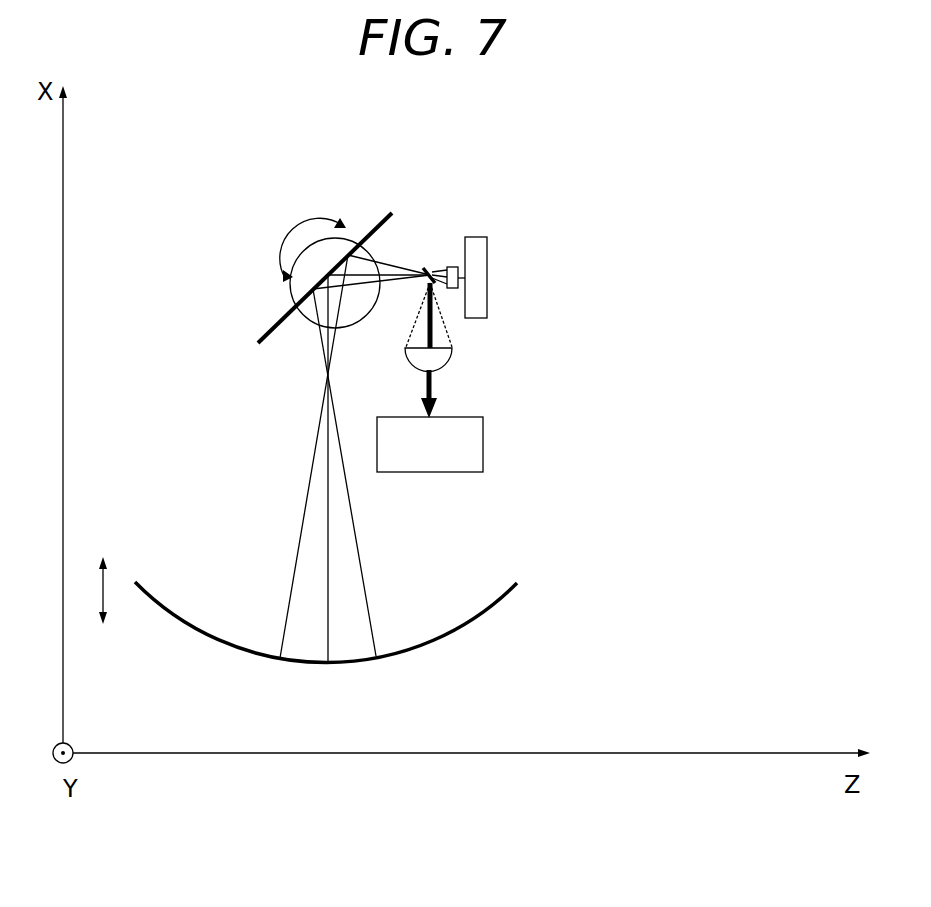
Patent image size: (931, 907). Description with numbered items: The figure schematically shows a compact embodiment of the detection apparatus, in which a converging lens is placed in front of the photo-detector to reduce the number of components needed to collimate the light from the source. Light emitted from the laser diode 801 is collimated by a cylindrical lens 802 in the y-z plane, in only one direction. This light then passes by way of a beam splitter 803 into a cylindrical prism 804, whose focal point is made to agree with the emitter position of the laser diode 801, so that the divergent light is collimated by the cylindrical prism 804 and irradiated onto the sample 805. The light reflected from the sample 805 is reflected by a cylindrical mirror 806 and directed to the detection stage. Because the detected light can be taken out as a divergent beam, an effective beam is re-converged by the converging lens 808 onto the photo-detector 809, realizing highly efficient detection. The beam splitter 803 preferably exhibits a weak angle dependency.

The laser diode 801 is at (488, 256).
The cylindrical lens 802 is at (450, 266).
The beam splitter 803 is at (428, 267).
The cylindrical prism 804 is at (308, 333).
The sample 805 is at (390, 212).
The cylindrical mirror 806 is at (333, 665).
The converging lens 808 is at (450, 362).
The photo-detector 809 is at (483, 440).